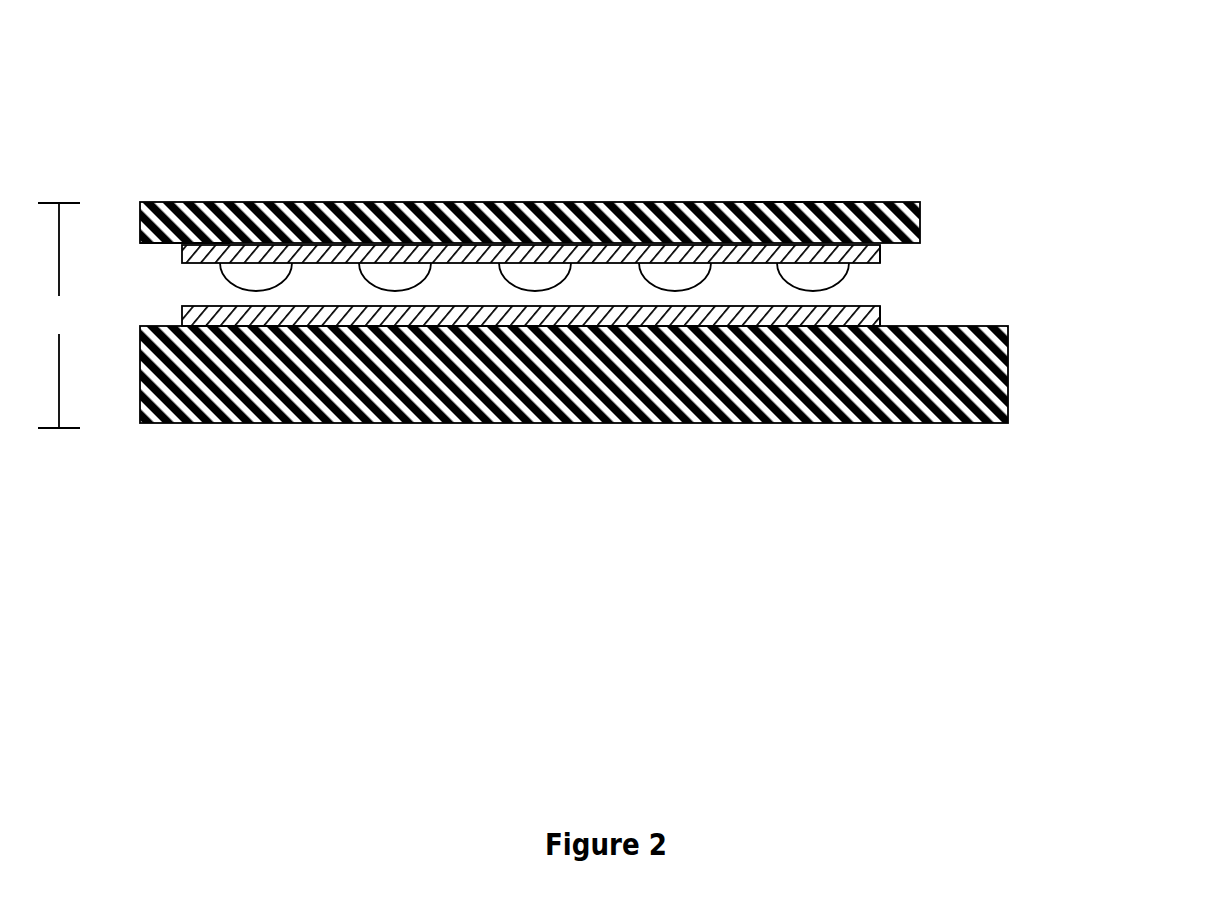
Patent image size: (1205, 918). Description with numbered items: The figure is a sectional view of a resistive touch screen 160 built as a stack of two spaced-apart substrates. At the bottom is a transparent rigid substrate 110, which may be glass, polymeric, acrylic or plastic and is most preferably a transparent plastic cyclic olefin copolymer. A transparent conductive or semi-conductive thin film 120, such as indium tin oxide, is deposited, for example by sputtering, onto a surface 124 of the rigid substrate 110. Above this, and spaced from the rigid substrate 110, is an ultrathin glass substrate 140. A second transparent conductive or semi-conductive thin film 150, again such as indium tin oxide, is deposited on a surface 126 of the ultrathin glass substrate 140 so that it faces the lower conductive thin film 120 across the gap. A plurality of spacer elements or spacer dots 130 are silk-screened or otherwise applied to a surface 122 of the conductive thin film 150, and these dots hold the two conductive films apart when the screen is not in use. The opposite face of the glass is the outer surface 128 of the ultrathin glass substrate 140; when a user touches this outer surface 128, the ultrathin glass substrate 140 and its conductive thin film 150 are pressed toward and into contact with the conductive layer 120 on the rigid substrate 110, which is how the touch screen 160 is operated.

The transparent rigid substrate 110 is at (1007, 398).
The transparent conductive thin film 120 is at (880, 316).
The surface of conductive thin film 122 is at (866, 262).
The surface of substrate 124 is at (980, 326).
The surface of substrate 126 is at (167, 245).
The outer surface of substrate 128 is at (798, 202).
The spacer dots 130 is at (812, 277).
The ultrathin glass substrate 140 is at (893, 203).
The transparent conductive thin film 150 is at (880, 253).
The resistive touch screen 160 is at (59, 315).